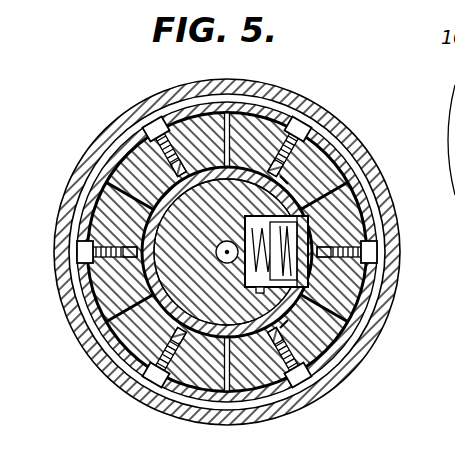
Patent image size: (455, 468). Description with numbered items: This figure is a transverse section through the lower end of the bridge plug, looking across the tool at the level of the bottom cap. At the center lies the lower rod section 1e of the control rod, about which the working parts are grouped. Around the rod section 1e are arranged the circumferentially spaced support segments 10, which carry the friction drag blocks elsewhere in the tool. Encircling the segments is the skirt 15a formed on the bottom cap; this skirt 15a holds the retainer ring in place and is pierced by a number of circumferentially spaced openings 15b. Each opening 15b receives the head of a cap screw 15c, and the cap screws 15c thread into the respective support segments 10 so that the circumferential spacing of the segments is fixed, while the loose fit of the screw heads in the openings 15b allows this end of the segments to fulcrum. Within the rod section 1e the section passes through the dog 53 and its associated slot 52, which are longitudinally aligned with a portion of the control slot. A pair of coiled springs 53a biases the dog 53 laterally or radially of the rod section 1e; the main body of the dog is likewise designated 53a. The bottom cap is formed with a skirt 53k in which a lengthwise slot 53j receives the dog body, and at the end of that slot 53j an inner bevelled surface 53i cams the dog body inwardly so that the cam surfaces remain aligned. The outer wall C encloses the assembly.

The support segments 10 is at (184, 225).
The skirt 15a is at (212, 257).
The openings 15b is at (227, 241).
The cap screws 15c is at (194, 242).
The slot 52 is at (259, 293).
The dog 53 is at (305, 272).
The coiled springs 53a is at (227, 252).
The inner bevelled surface 53i is at (306, 287).
The slot 53j is at (299, 218).
The skirt 53k is at (284, 180).
The casing C is at (89, 141).
The lower rod section 1e is at (454, 222).